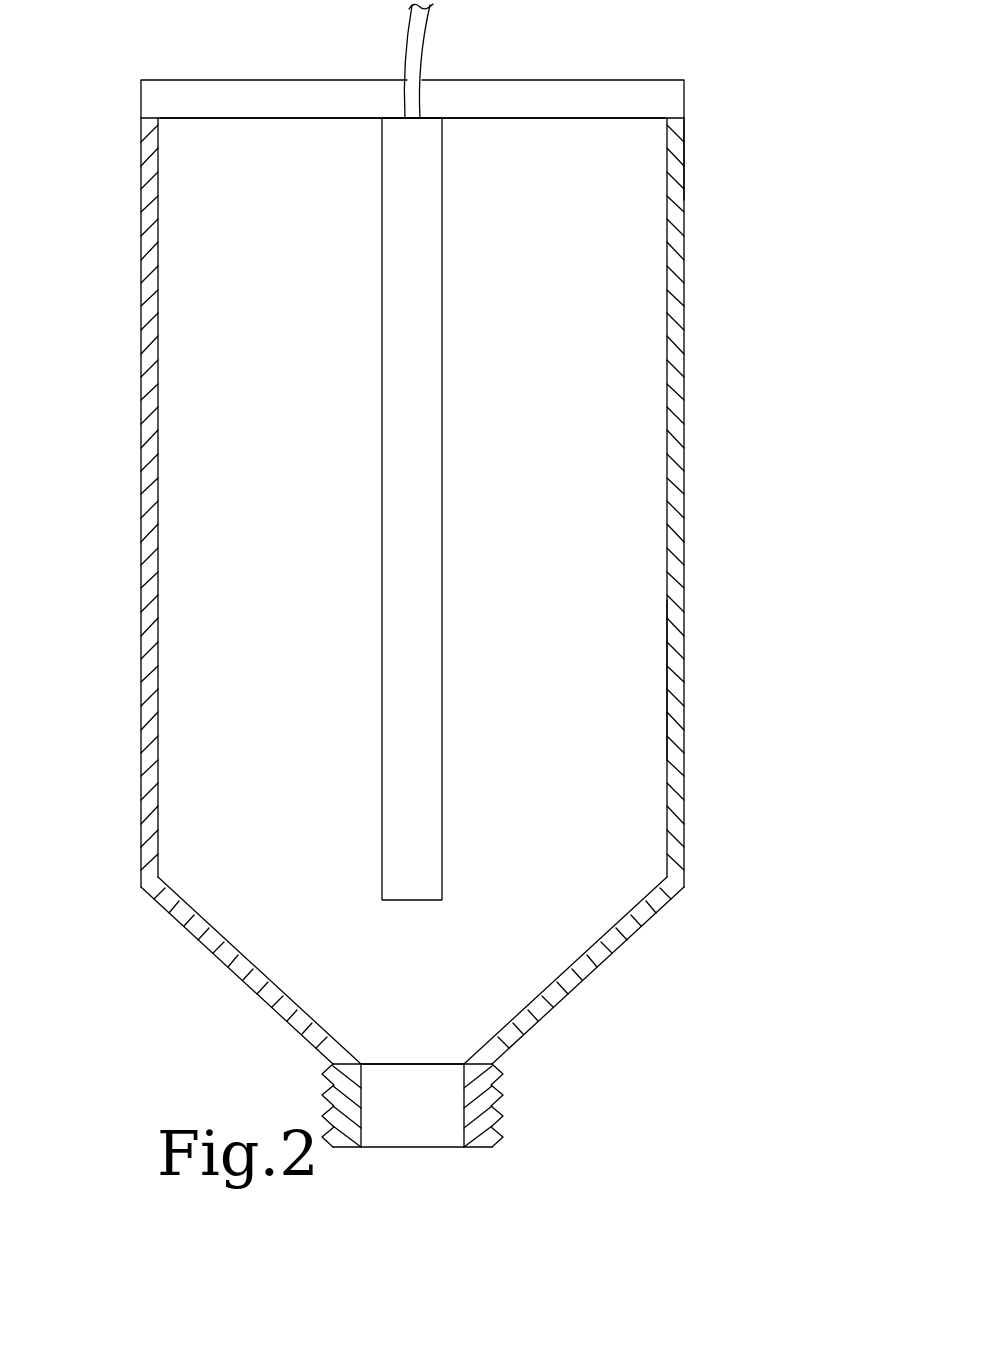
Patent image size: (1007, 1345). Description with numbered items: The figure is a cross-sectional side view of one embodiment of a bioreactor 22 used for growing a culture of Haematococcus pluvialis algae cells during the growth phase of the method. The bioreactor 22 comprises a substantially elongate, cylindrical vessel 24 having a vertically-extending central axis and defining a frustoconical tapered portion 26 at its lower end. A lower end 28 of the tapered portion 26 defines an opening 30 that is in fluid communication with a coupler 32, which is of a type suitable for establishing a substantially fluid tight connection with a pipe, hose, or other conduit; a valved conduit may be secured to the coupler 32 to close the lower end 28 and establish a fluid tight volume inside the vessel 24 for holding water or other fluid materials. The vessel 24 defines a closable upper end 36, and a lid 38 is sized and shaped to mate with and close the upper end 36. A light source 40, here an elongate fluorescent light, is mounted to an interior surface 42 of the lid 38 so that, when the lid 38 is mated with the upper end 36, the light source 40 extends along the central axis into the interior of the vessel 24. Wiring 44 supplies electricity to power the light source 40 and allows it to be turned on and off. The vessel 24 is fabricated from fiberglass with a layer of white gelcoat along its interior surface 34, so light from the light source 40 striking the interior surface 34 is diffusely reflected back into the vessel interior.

The bioreactor 22 is at (97, 138).
The vessel 24 is at (685, 483).
The tapered portion 26 is at (597, 972).
The lower end 28 is at (492, 1063).
The opening 30 is at (396, 1066).
The coupler 32 is at (500, 1110).
The interior surface 34 is at (663, 733).
The upper end 36 is at (685, 170).
The lid 38 is at (620, 80).
The light source 40 is at (380, 302).
The interior surface of the lid 42 is at (610, 120).
The wiring 44 is at (406, 25).